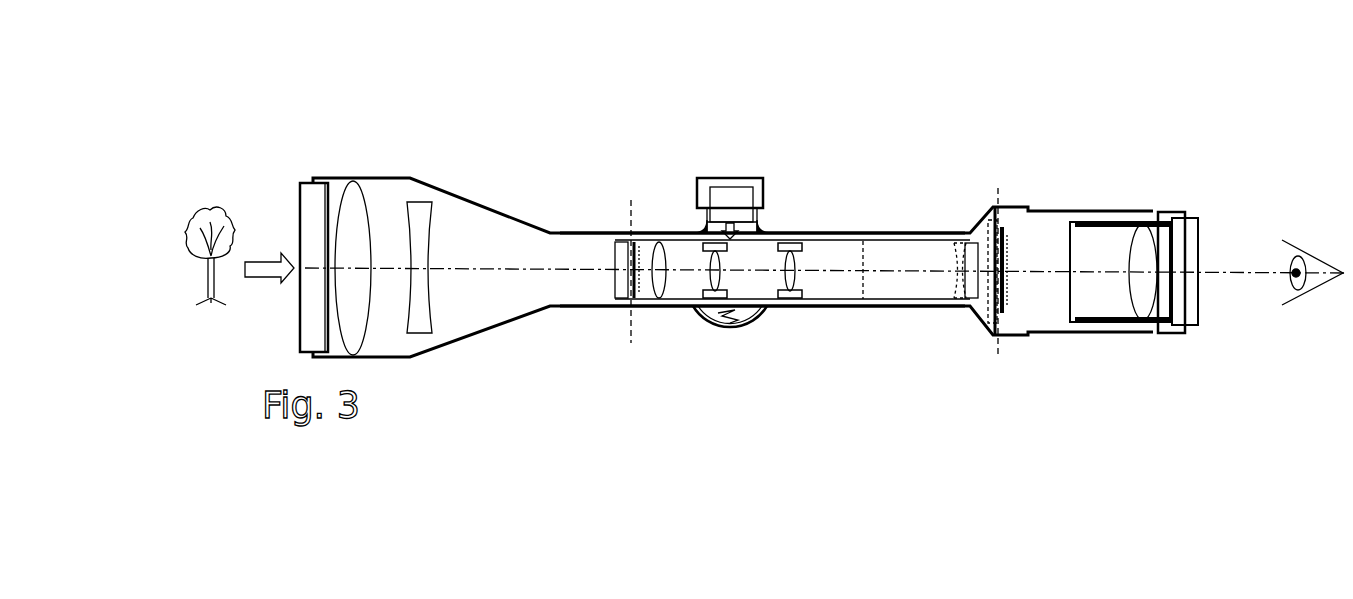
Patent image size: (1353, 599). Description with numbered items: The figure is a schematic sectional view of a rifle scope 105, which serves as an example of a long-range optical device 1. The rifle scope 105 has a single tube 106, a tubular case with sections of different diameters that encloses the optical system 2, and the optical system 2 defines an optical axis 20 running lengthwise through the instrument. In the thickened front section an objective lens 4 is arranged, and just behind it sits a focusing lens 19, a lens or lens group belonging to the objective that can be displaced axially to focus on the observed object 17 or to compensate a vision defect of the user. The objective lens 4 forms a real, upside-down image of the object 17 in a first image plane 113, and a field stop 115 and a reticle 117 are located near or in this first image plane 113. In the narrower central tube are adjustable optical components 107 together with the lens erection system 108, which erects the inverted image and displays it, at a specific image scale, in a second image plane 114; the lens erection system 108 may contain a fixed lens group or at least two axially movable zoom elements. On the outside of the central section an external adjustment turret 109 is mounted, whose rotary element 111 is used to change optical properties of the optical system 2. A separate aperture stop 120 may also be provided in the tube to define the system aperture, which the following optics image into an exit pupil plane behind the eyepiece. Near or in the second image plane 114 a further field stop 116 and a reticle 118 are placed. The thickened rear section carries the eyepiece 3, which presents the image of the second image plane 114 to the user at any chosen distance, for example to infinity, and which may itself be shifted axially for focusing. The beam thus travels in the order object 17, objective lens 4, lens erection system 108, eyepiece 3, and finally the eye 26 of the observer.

The long-range optical device 1 is at (749, 228).
The rifle scope 105 is at (602, 182).
The optical system 2 is at (312, 322).
The eyepiece 3 is at (1163, 242).
The objective lens 4 is at (390, 173).
The object 17 is at (218, 207).
The focusing lens 19 is at (435, 201).
The optical axis 20 is at (1107, 272).
The eye 26 is at (1296, 241).
The tube 106 is at (922, 308).
The adjustable optical components 107 is at (806, 250).
The lens erection system 108 is at (773, 316).
The adjustment turret 109 is at (775, 235).
The rotary element 111 is at (742, 179).
The first image plane 113 is at (631, 206).
The second image plane 114 is at (1000, 352).
The field stop 115 is at (627, 284).
The field stop 116 is at (1004, 232).
The reticle 117 is at (641, 293).
The reticle 118 is at (974, 233).
The aperture stop 120 is at (866, 301).